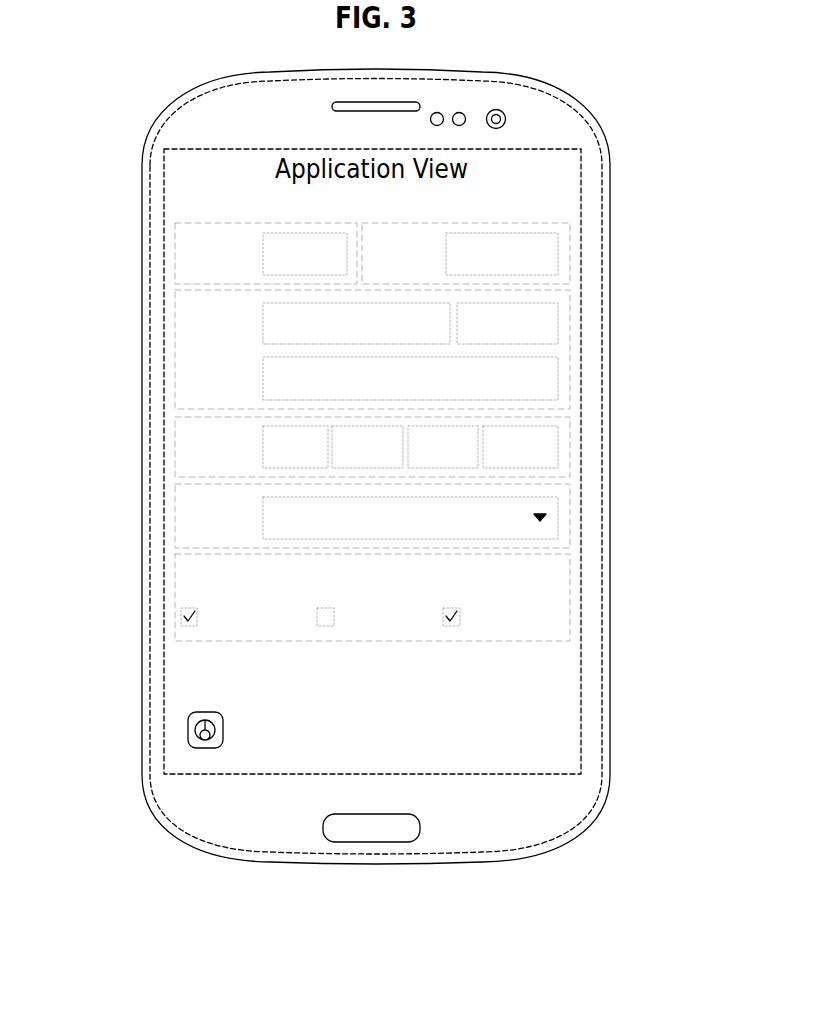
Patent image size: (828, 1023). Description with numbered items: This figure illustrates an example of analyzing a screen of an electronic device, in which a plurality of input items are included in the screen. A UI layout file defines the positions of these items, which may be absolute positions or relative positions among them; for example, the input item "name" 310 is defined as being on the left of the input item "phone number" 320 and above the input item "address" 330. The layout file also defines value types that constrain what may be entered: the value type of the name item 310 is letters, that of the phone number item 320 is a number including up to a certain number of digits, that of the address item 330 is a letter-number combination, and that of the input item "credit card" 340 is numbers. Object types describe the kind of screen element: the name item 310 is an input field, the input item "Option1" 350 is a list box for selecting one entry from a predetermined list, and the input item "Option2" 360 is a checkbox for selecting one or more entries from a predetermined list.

The input item "name" 310 is at (177, 253).
The input item "phone number" 320 is at (569, 253).
The input item "address" 330 is at (177, 350).
The input item "credit card" 340 is at (177, 449).
The input item "Option1" 350 is at (177, 519).
The input item "Option2" 360 is at (177, 594).